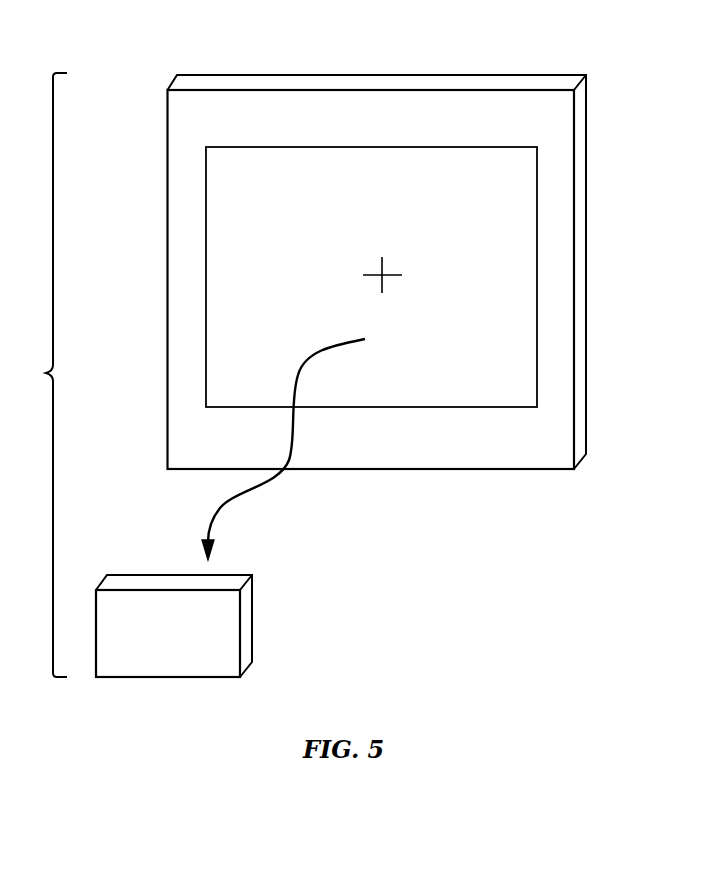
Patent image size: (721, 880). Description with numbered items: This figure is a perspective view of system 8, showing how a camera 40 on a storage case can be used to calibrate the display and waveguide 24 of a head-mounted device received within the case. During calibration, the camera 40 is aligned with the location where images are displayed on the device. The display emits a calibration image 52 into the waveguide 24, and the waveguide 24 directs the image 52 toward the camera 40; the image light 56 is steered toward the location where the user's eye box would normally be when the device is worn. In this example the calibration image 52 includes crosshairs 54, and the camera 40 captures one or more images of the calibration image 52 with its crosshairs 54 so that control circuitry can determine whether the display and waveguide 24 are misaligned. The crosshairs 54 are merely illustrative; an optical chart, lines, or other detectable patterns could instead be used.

The system 8 is at (46, 375).
The waveguide 24 is at (390, 75).
The calibration image 52 is at (528, 279).
The crosshairs 54 is at (392, 285).
The image light 56 is at (271, 491).
The camera 40 is at (168, 667).